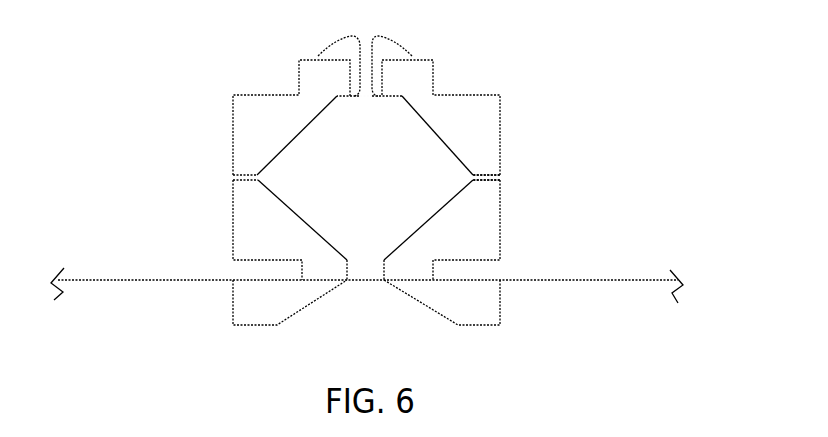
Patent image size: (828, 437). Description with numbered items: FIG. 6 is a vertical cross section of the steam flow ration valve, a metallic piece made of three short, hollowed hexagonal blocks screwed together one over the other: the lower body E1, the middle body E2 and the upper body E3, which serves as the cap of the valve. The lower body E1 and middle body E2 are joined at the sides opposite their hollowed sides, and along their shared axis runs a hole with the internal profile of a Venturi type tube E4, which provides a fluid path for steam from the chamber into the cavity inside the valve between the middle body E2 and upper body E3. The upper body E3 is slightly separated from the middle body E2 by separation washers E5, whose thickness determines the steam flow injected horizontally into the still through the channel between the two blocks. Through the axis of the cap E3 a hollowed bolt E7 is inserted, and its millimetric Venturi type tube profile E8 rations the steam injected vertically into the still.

The lower body E1 is at (247, 310).
The middle body E2 is at (247, 225).
The upper body E3 is at (247, 125).
The internal profile of Venturi type tube E4 is at (367, 285).
The separation washers E5 is at (480, 177).
The hollowed bolt E7 is at (392, 48).
The Venturi type tube profile of the bolt E8 is at (368, 106).